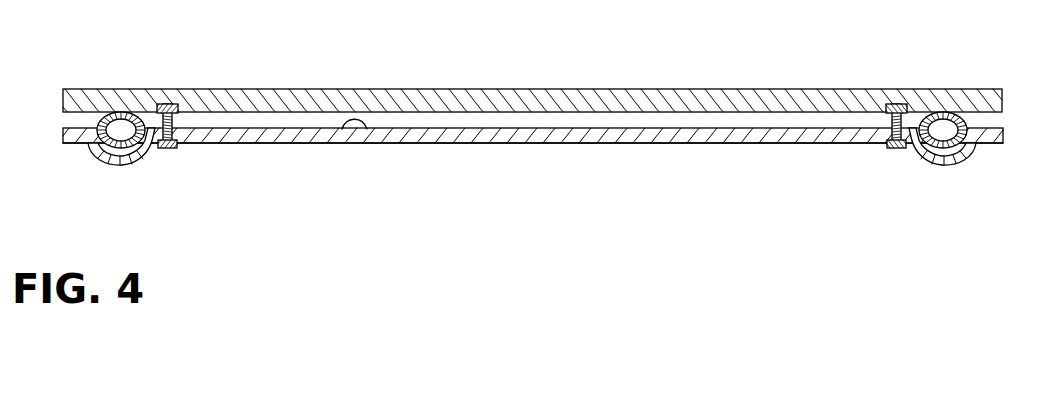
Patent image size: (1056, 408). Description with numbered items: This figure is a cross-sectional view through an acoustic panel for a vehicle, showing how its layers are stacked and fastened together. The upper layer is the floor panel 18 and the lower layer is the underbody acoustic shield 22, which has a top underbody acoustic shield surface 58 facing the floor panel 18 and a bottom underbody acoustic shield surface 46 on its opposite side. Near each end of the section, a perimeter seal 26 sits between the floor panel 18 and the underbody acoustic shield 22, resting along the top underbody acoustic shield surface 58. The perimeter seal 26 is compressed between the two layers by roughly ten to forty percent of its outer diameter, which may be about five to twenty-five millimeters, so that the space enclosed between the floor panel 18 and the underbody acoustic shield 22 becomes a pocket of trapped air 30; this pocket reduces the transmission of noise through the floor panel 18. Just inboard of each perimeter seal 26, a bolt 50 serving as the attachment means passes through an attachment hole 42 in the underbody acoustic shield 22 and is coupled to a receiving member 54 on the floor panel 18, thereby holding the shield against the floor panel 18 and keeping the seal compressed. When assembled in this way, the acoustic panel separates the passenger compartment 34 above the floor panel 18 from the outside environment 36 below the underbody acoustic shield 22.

The floor panel 18 is at (554, 102).
The underbody acoustic shield 22 is at (528, 134).
The perimeter seal 26 is at (93, 128).
The pocket of trapped air 30 is at (401, 122).
The passenger compartment 34 is at (292, 71).
The outside environment 36 is at (591, 159).
The attachment hole 42 is at (150, 151).
The bottom underbody acoustic shield surface 46 is at (422, 144).
The bolt 50 is at (180, 147).
The receiving member 54 is at (168, 112).
The top underbody acoustic shield surface 58 is at (351, 130).